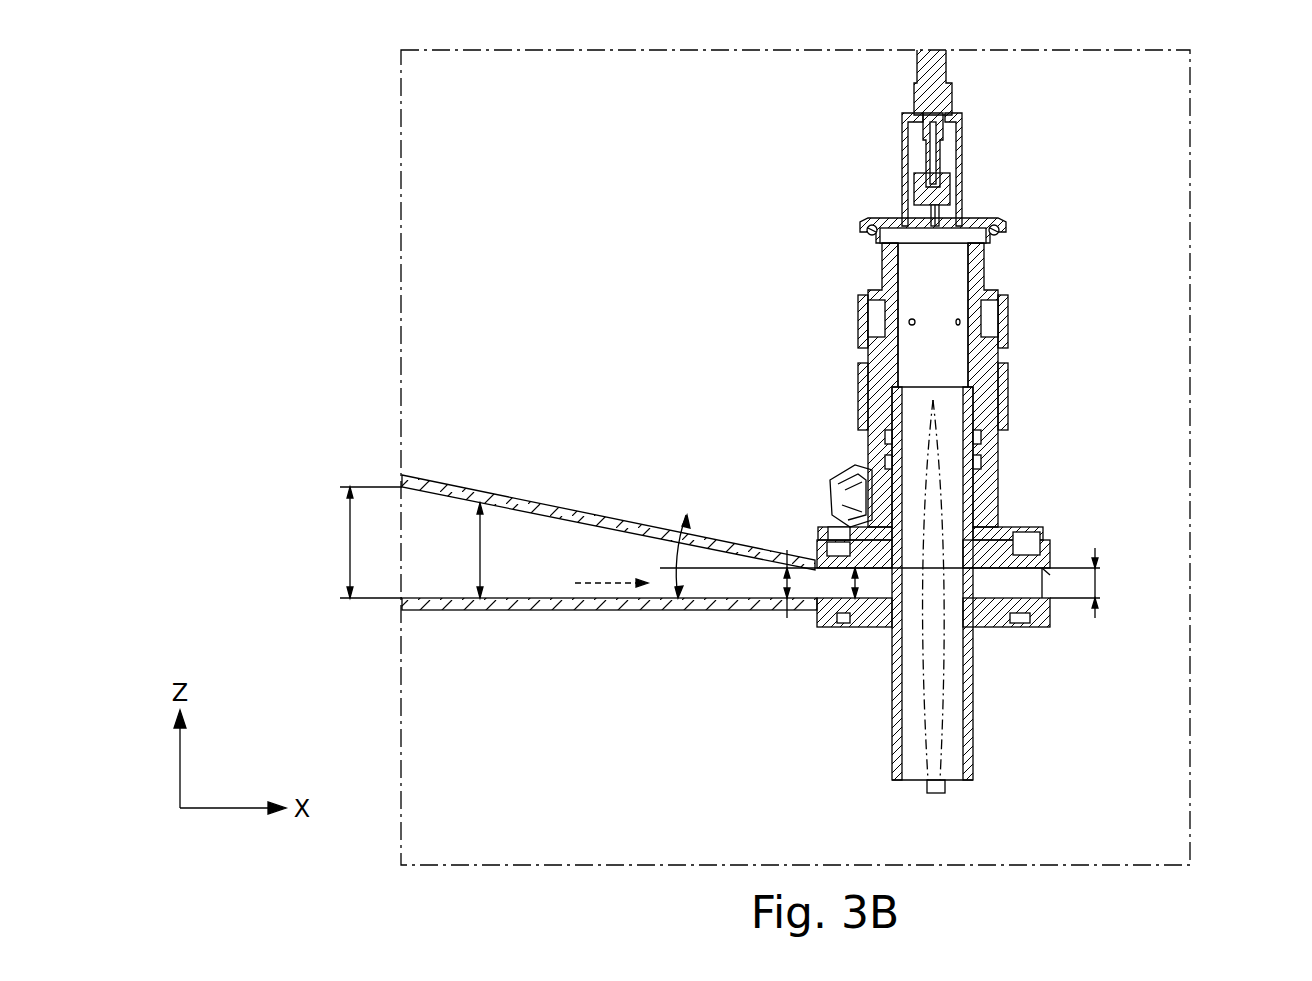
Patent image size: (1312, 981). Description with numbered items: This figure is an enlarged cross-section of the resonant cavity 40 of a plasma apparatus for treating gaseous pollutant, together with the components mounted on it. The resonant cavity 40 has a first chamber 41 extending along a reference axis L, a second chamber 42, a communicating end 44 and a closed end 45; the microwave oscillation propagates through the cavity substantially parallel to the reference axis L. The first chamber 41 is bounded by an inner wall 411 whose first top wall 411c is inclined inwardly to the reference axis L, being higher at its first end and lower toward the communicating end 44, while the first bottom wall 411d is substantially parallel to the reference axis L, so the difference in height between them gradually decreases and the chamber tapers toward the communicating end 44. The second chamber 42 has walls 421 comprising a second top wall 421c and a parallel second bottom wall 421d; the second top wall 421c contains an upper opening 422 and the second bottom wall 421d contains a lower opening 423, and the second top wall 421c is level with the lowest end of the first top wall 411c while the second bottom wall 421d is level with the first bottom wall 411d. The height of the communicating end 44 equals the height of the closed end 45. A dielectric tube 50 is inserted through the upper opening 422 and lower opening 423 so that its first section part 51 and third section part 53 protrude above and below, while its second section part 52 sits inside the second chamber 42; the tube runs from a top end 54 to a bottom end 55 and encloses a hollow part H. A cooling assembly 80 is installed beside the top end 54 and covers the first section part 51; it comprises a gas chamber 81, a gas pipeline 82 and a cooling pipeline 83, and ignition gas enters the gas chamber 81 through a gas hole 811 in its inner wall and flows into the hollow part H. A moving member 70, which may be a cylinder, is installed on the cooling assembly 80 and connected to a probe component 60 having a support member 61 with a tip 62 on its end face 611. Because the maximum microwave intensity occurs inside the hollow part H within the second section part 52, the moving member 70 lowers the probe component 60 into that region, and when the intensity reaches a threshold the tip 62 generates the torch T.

The resonant cavity 40 is at (805, 438).
The first chamber 41 is at (681, 541).
The inner wall 411 is at (609, 479).
The first top wall 411c is at (512, 502).
The first bottom wall 411d is at (550, 598).
The second chamber 42 is at (972, 529).
The second chamber walls 421 is at (1054, 497).
The second top wall 421c is at (1025, 585).
The second bottom wall 421d is at (1032, 557).
The upper opening 422 is at (838, 487).
The lower opening 423 is at (880, 622).
The communicating end 44 is at (793, 556).
The closed end 45 is at (1050, 600).
The dielectric tube 50 is at (978, 557).
The first section part 51 is at (888, 408).
The second section part 52 is at (1000, 622).
The third section part 53 is at (892, 740).
The top end 54 is at (988, 318).
The bottom end 55 is at (945, 790).
The probe component 60 is at (974, 171).
The support member 61 is at (945, 185).
The end face 611 is at (925, 190).
The tip 62 is at (945, 212).
The moving member 70 is at (935, 70).
The cooling assembly 80 is at (1007, 363).
The gas chamber 81 is at (915, 266).
The gas hole 811 is at (978, 275).
The gas pipeline 82 is at (916, 320).
The cooling pipeline 83 is at (990, 388).
The hollow part H is at (960, 403).
The reference axis L is at (597, 628).
The torch T is at (937, 795).